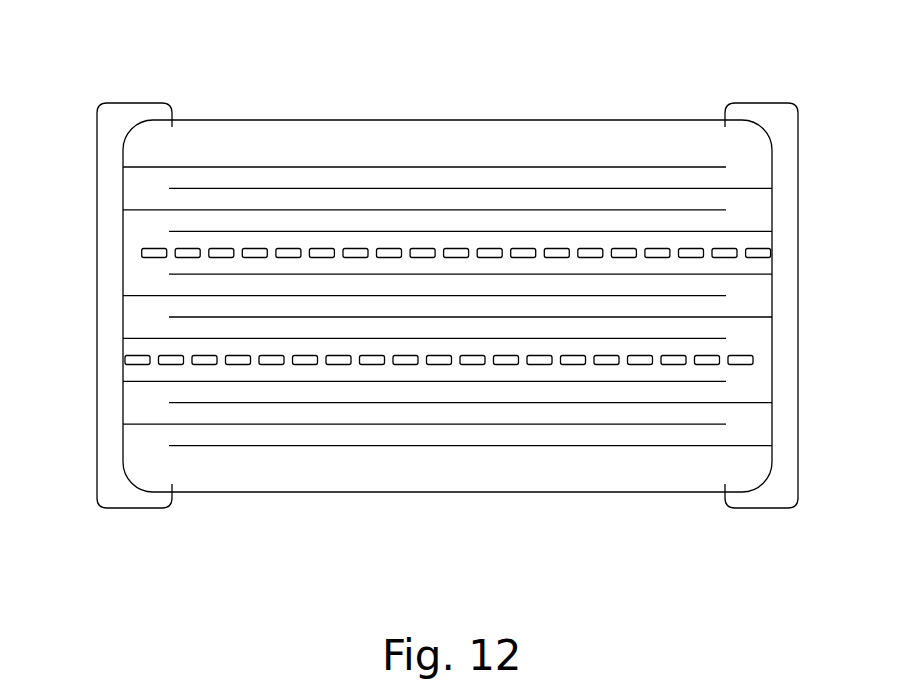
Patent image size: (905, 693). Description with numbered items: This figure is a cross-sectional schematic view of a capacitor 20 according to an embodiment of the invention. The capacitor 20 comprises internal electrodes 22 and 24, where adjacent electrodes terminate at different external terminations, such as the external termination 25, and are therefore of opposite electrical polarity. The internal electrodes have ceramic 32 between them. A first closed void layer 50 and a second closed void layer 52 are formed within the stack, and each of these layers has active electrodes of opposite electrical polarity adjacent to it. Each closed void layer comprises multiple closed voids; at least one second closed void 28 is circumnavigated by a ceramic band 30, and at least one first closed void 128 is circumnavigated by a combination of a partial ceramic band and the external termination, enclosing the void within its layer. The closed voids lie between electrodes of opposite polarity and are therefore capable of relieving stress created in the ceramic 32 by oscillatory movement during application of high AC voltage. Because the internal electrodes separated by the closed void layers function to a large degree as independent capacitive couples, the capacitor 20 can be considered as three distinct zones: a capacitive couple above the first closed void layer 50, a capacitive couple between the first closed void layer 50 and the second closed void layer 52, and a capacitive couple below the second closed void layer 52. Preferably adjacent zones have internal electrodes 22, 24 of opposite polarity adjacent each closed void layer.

The capacitor 20 is at (454, 304).
The internal electrode 22 is at (437, 209).
The internal electrode 24 is at (598, 230).
The external termination 25 is at (115, 122).
The second closed void 28 is at (727, 249).
The ceramic band 30 is at (627, 360).
The ceramic 32 is at (143, 188).
The first closed void layer 50 is at (803, 253).
The second closed void layer 52 is at (803, 360).
The first closed void 128 is at (760, 248).